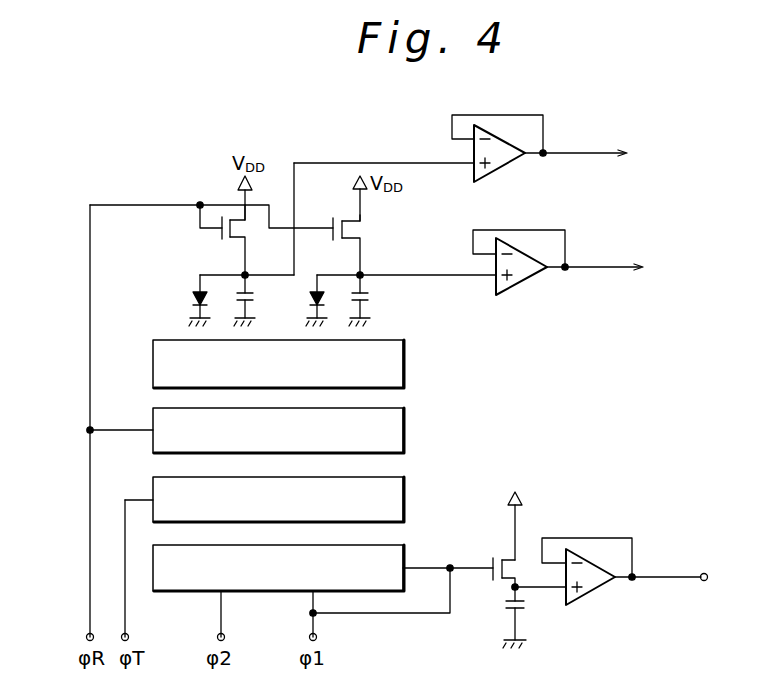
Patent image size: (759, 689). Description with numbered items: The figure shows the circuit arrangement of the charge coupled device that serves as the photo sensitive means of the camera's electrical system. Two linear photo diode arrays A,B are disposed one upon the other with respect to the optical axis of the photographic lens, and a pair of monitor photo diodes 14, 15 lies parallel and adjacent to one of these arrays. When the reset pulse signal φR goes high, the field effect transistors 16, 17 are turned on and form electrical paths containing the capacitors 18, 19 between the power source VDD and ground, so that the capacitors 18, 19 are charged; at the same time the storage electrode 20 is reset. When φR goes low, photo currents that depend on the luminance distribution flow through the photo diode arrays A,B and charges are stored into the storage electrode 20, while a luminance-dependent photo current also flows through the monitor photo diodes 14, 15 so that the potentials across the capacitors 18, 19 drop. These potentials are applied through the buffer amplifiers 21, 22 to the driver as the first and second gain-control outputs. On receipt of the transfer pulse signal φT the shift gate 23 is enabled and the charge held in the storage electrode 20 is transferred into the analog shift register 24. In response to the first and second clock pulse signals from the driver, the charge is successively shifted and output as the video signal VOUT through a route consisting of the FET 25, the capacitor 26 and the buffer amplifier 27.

The monitor photo diode 14 is at (190, 302).
The monitor photo diode 15 is at (308, 300).
The field effect transistor 16 is at (218, 228).
The field effect transistor 17 is at (358, 226).
The capacitor 18 is at (255, 300).
The capacitor 19 is at (370, 298).
The storage electrode 20 is at (405, 415).
The buffer amplifier 21 is at (500, 170).
The buffer amplifier 22 is at (522, 284).
The shift gate 23 is at (405, 484).
The analog shift register 24 is at (405, 550).
The FET 25 is at (487, 578).
The capacitor 26 is at (527, 606).
The buffer amplifier 27 is at (586, 594).
The linear arrays of photo diodes A,B is at (308, 364).